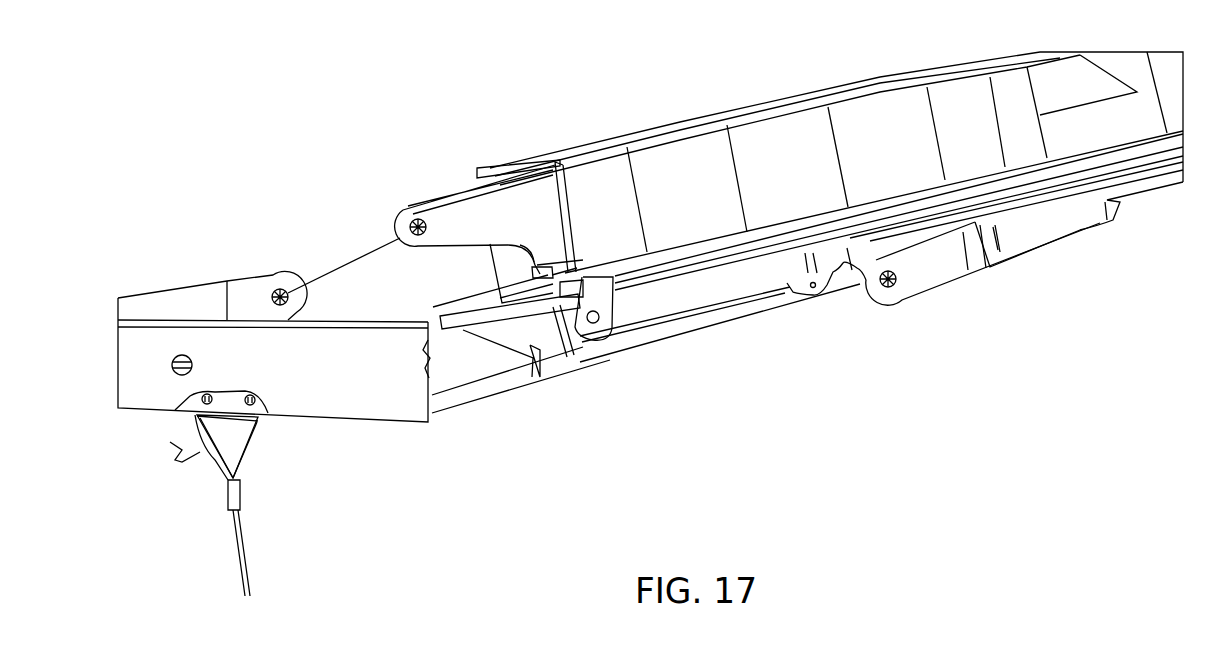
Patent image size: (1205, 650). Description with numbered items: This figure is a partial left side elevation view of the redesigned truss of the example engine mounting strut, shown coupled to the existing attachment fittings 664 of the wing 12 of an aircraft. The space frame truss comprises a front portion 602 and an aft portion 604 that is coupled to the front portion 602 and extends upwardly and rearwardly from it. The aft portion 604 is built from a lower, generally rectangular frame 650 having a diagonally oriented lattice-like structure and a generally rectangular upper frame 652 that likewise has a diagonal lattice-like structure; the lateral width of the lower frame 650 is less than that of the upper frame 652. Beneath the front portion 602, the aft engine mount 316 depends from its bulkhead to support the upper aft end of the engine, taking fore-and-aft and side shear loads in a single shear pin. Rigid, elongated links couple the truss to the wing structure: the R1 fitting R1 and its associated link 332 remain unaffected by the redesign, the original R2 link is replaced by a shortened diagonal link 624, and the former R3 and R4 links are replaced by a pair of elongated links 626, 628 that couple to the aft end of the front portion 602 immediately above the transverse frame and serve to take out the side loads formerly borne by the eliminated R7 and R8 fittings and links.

The wing 12 is at (787, 130).
The front portion 602 is at (382, 497).
The aft portion 604 is at (570, 462).
The R1 fitting R1 is at (270, 274).
The link 332 is at (355, 258).
The attachment fittings 664 is at (448, 210).
The elongated link 628 is at (465, 300).
The upper frame 652 is at (460, 327).
The lower frame 650 is at (517, 377).
The elongated link 626 is at (607, 340).
The diagonal link 624 is at (745, 320).
The aft engine mount 316 is at (253, 445).